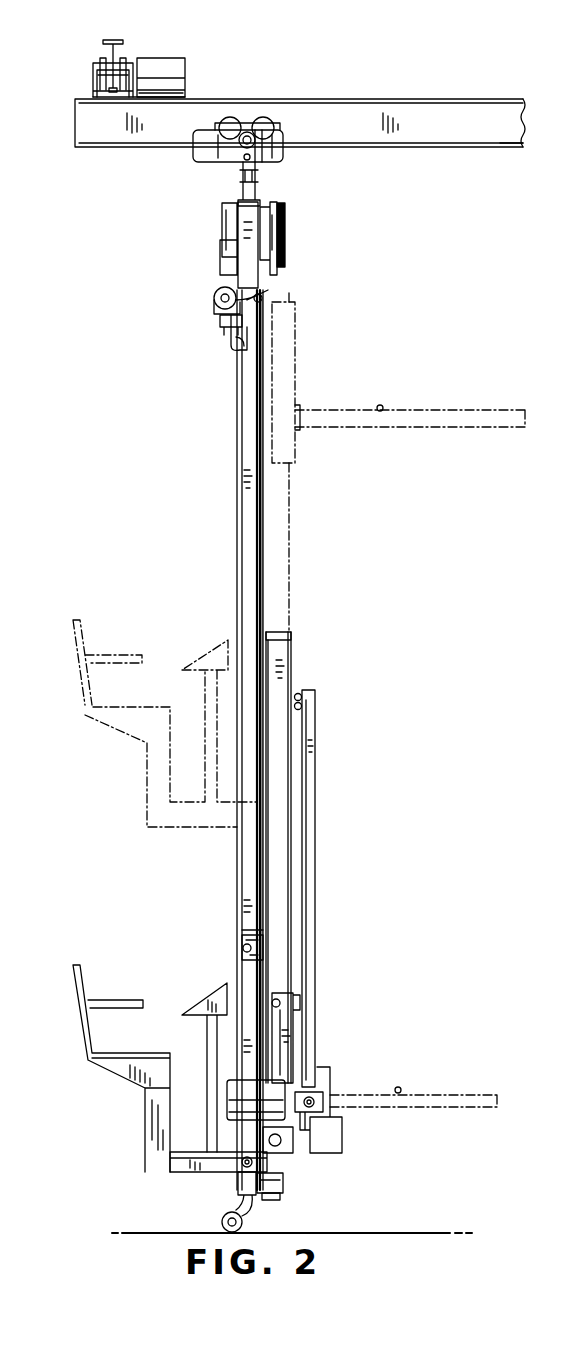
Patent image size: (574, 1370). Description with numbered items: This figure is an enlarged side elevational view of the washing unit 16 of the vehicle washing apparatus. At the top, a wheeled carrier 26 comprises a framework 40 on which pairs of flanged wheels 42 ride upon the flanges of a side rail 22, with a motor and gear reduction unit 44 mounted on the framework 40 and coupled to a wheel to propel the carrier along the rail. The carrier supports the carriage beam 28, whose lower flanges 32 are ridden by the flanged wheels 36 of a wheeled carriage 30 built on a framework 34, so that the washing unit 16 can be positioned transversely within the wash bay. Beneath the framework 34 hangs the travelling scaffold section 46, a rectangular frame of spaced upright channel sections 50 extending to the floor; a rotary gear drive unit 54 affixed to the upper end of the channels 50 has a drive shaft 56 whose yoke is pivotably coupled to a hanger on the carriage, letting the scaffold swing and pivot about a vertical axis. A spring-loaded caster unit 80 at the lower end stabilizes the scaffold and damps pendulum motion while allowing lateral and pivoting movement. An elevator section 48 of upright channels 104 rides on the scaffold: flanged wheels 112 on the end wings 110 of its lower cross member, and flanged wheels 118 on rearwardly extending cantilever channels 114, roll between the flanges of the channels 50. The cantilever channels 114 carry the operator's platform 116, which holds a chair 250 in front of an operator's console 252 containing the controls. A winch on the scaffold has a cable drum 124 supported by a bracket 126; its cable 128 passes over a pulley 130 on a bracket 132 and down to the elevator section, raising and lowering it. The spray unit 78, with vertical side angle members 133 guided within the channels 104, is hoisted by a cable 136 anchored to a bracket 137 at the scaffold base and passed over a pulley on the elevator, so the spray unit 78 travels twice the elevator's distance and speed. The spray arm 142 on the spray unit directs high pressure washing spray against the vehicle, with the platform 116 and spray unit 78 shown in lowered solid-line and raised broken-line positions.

The washing unit 16 is at (358, 833).
The side rail 22 is at (113, 38).
The wheeled carrier 26 is at (140, 54).
The carriage beam 28 is at (476, 112).
The wheeled carriage 30 is at (290, 160).
The lower flange 32 is at (512, 150).
The framework 34 is at (206, 152).
The flanged wheel 36 is at (268, 117).
The framework 40 is at (88, 92).
The flanged wheel 42 is at (124, 60).
The motor and gear reduction unit 44 is at (186, 68).
The travelling scaffold section 46 is at (230, 514).
The elevator section 48 is at (298, 660).
The channel section 50 is at (246, 430).
The rotary gear drive unit 54 is at (222, 212).
The drive shaft 56 is at (240, 193).
The spray unit 78 is at (358, 1058).
The caster unit 80 is at (212, 1223).
The upright channel 104 is at (290, 633).
The end wing 110 is at (246, 938).
The flanged wheel 112 is at (238, 948).
The cantilever channel 114 is at (172, 1166).
The operator's platform 116 is at (118, 1128).
The flanged wheel 118 is at (240, 1165).
The cable drum 124 is at (215, 300).
The bracket 126 is at (222, 321).
The cable 128 is at (264, 506).
The pulley 130 is at (276, 302).
The bracket 132 is at (236, 346).
The side angle member 133 is at (284, 1031).
The cable 136 is at (285, 1185).
The bracket 137 is at (284, 1196).
The spray arm 142 is at (322, 746).
The chair 250 is at (122, 1073).
The operator's console 252 is at (196, 1003).